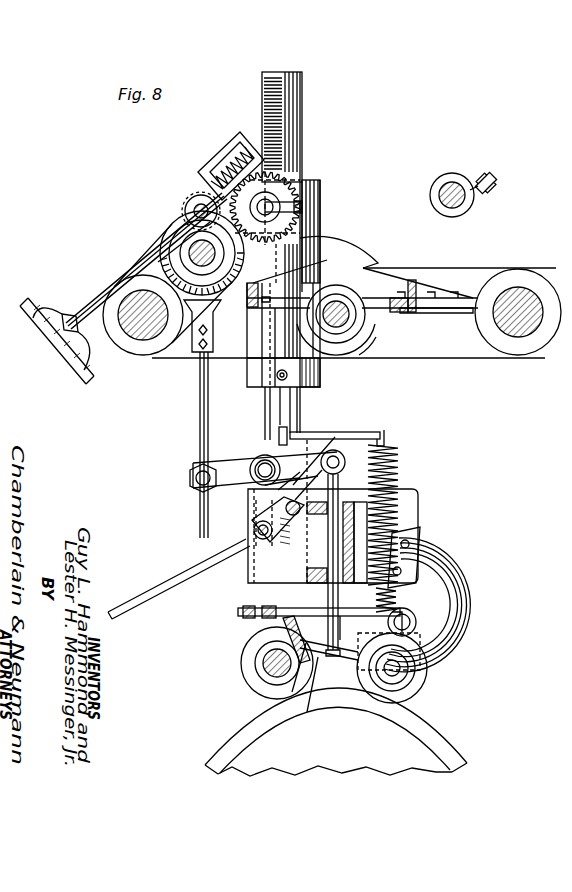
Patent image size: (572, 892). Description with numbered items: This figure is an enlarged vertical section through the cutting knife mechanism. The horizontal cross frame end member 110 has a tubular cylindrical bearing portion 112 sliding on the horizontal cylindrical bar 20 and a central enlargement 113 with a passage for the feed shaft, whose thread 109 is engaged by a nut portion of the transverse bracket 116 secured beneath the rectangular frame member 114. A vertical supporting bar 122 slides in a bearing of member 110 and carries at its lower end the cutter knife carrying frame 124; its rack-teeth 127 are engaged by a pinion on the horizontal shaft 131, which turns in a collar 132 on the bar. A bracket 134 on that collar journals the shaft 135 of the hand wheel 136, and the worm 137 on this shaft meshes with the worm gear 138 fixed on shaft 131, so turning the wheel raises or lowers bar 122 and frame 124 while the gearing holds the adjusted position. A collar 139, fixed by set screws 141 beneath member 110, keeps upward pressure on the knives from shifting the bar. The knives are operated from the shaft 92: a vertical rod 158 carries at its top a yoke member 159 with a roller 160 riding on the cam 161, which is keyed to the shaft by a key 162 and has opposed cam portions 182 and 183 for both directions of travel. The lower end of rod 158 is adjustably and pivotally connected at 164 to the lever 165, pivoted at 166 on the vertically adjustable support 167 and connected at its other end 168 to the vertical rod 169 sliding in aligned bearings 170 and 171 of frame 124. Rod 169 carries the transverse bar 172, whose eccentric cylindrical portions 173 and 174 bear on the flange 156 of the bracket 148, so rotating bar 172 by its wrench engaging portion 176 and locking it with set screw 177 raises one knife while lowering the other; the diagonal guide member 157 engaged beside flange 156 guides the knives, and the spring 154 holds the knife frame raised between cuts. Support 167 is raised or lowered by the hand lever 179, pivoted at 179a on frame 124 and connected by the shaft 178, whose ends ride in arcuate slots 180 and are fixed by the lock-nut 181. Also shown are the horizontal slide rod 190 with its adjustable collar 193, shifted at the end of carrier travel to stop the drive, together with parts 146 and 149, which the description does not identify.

The vertical supporting bar 122 is at (300, 108).
The rack-teeth 127 is at (283, 118).
The worm 137 is at (235, 152).
The bracket 134 is at (212, 170).
The worm gear 138 is at (280, 190).
The collar 132 is at (300, 197).
The horizontal shaft 131 is at (300, 208).
The horizontal slide rod 190 is at (450, 182).
The collar 193 is at (474, 206).
The roller 160 is at (190, 203).
The cam portion 183 is at (178, 228).
The shaft 92 is at (247, 284).
The key 162 is at (190, 250).
The cam 161 is at (180, 258).
The cam portion 182 is at (165, 270).
The shaft 135 is at (108, 298).
The hand wheel 136 is at (62, 345).
The horizontal cylindrical bar 20 is at (132, 352).
The tubular cylindrical bearing portion 112 is at (140, 340).
The horizontal cross frame end member 110 is at (440, 268).
The enlargement 113 is at (340, 262).
The thread 109 is at (338, 300).
The rectangular frame member 114 is at (400, 296).
The transverse bracket 116 is at (378, 318).
The collar 139 is at (322, 378).
The set screw 141 is at (278, 380).
The yoke member 159 is at (198, 345).
The vertical rod 158 is at (200, 400).
The lever 165 is at (232, 466).
The adjustable pivotal connection 164 is at (190, 479).
The pivot 166 is at (300, 445).
The vertically adjustable support 167 is at (352, 428).
The pivotal connection 168 is at (346, 460).
The bearing 170 is at (340, 485).
The spring 154 is at (400, 470).
The cutter knife carrying frame 124 is at (418, 527).
The vertical rod 169 is at (360, 508).
The hand lever 179 is at (268, 541).
The arcuate slot 180 is at (256, 501).
The lock-nut 181 is at (256, 526).
The pivot 179a is at (300, 530).
The shaft 178 is at (255, 557).
The guide member 157 is at (440, 584).
The wheel 146 is at (470, 606).
The bracket 148 is at (414, 624).
The projecting flange 156 is at (262, 661).
The roller 149 is at (256, 688).
The transverse bar 172 is at (262, 608).
The bearing 171 is at (300, 590).
The wrench engaging portion 176 is at (243, 612).
The cylindrical portion 174 is at (262, 618).
The cylindrical portion 173 is at (348, 656).
The set screw 177 is at (336, 709).